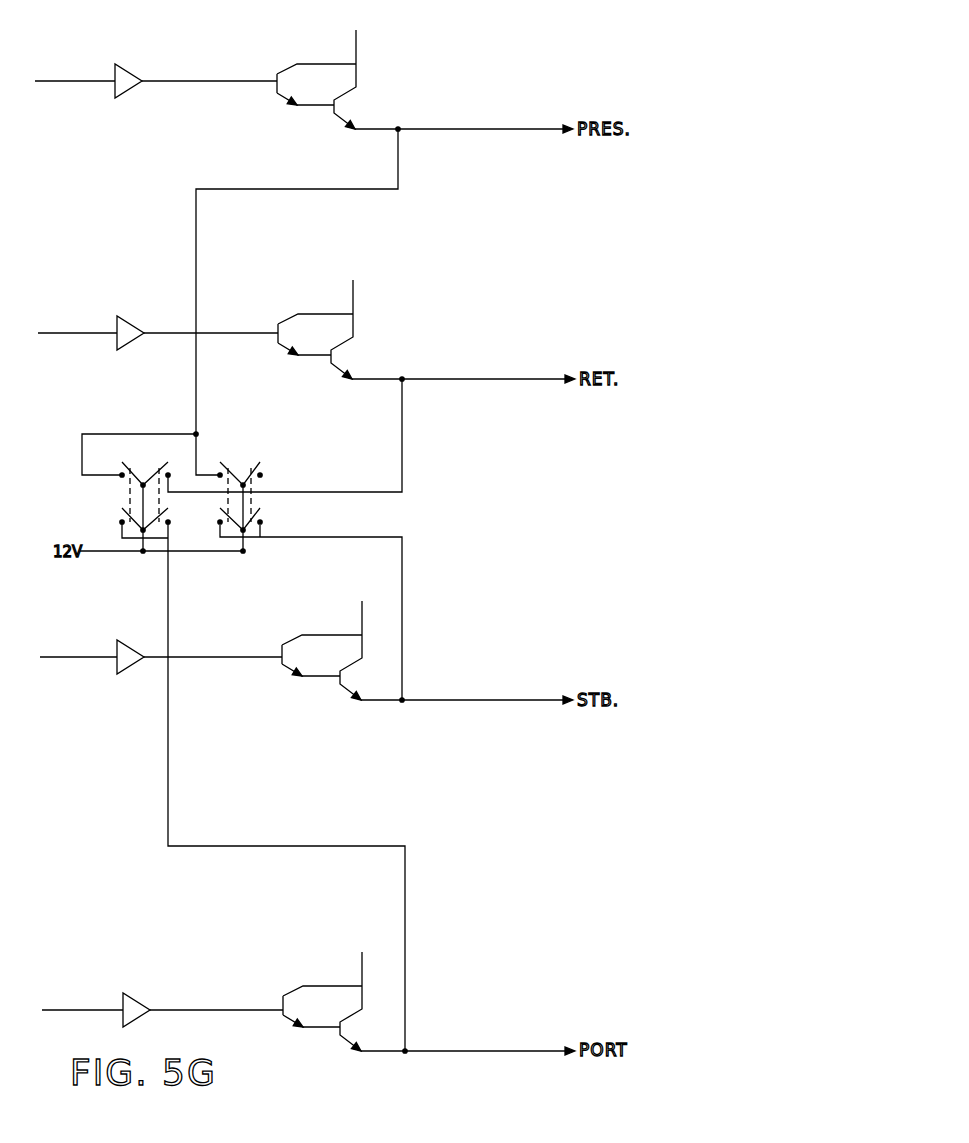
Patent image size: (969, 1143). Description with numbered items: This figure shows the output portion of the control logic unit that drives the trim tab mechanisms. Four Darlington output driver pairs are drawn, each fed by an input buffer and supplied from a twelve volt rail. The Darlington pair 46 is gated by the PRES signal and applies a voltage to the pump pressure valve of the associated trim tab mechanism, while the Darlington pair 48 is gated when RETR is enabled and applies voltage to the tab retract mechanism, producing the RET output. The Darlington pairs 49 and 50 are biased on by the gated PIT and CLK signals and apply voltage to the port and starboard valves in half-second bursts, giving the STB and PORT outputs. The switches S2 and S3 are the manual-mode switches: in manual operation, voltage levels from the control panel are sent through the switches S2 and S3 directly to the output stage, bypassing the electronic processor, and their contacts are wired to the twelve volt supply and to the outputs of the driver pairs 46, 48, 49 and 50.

The Darlington pair 46 is at (327, 70).
The Darlington pair 48 is at (326, 320).
The Darlington pair 49 is at (333, 641).
The Darlington pair 50 is at (333, 992).
The switch S2 is at (128, 507).
The switch S3 is at (258, 507).